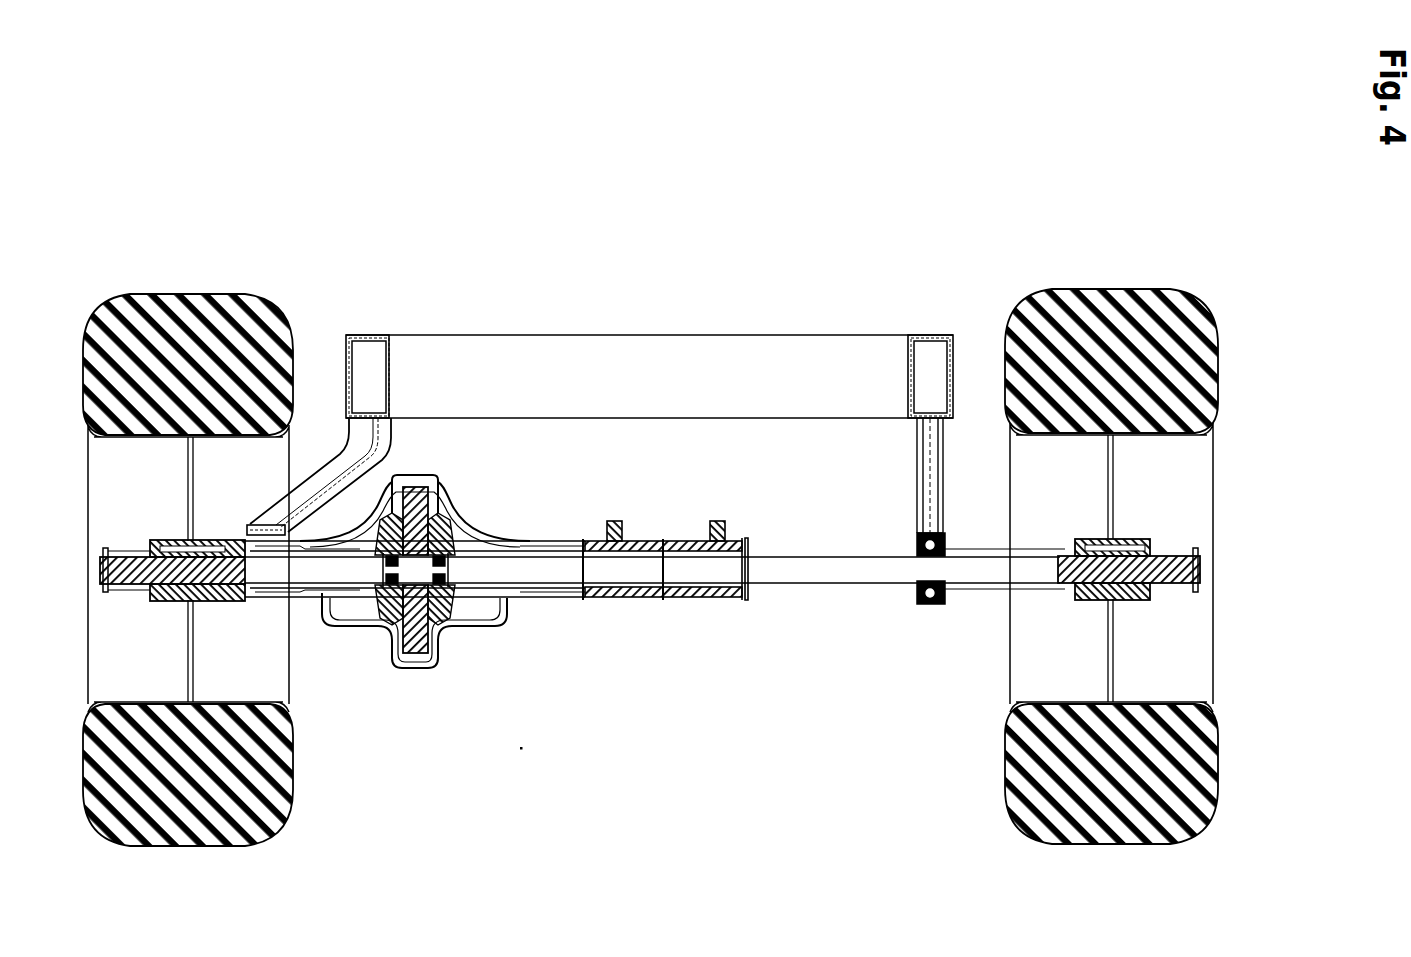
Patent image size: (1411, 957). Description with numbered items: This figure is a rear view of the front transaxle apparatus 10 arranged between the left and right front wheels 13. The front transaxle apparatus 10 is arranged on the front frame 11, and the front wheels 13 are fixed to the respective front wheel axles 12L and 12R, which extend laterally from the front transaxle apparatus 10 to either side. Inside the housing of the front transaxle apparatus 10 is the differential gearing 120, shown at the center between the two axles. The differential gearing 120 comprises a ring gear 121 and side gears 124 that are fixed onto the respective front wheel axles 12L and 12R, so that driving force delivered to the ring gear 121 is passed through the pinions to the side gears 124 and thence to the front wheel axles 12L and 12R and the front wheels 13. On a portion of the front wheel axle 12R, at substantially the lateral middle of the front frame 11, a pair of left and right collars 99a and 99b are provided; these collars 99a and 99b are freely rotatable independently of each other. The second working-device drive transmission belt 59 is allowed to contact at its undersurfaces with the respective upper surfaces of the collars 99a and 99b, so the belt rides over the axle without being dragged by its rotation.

The front transaxle apparatus 10 is at (500, 640).
The front frame 11 is at (592, 418).
The front wheel axle 12L is at (205, 597).
The front wheel axle 12R is at (840, 587).
The front wheel 13 is at (293, 665).
The second working-device drive transmission belt 59 is at (722, 518).
The collar 99a is at (705, 598).
The collar 99b is at (612, 598).
The differential gearing 120 is at (433, 514).
The ring gear 121 is at (432, 640).
The side gear 124 is at (393, 525).